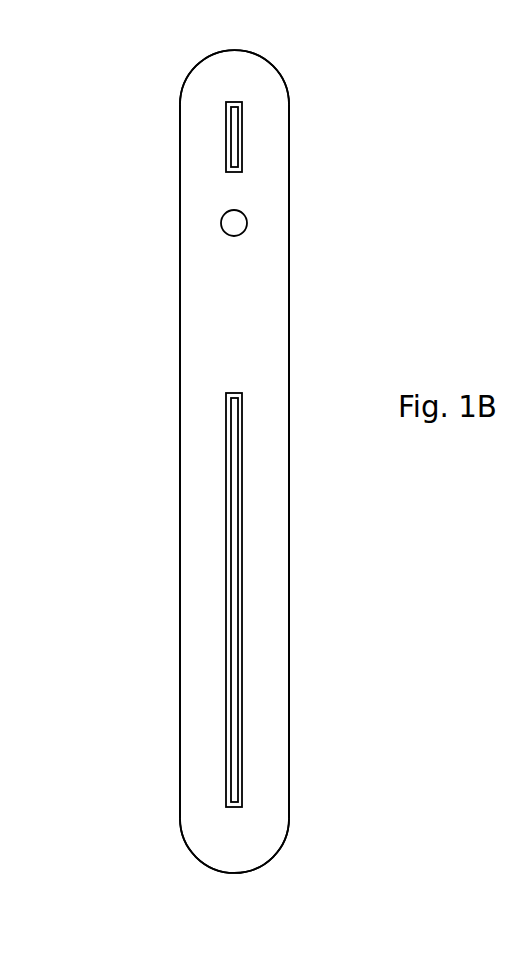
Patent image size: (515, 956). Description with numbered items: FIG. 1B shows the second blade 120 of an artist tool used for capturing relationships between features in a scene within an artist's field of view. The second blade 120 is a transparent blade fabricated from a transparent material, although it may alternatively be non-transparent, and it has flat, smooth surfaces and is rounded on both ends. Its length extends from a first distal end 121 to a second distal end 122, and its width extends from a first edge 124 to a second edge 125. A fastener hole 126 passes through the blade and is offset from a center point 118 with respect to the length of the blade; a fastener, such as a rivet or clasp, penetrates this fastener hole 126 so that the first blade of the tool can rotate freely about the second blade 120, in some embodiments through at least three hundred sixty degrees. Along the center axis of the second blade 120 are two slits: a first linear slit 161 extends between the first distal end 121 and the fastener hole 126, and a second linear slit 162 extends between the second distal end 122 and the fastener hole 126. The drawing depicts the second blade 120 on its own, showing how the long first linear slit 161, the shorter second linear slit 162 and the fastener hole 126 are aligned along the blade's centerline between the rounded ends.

The center point 118 is at (165, 460).
The second blade 120 is at (367, 128).
The first distal end 121 is at (230, 868).
The second distal end 122 is at (232, 50).
The first edge 124 is at (289, 503).
The second edge 125 is at (180, 652).
The fastener hole 126 is at (247, 223).
The first linear slit 161 is at (232, 575).
The second linear slit 162 is at (229, 125).